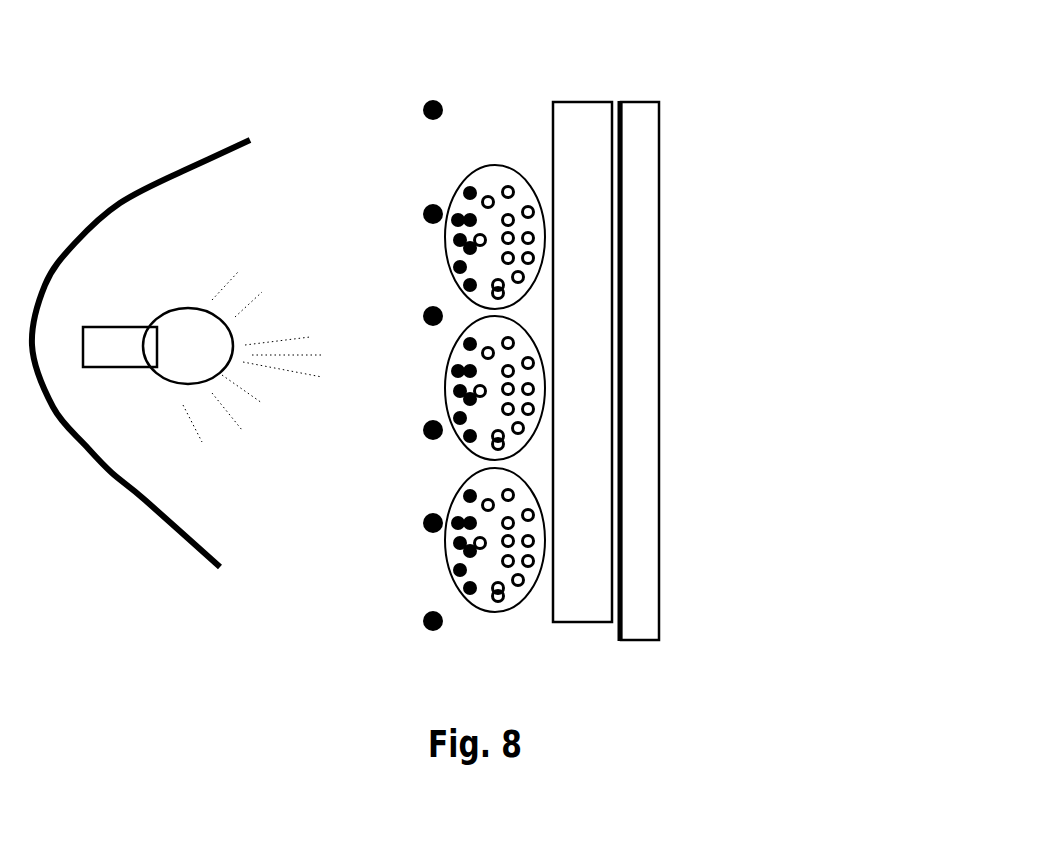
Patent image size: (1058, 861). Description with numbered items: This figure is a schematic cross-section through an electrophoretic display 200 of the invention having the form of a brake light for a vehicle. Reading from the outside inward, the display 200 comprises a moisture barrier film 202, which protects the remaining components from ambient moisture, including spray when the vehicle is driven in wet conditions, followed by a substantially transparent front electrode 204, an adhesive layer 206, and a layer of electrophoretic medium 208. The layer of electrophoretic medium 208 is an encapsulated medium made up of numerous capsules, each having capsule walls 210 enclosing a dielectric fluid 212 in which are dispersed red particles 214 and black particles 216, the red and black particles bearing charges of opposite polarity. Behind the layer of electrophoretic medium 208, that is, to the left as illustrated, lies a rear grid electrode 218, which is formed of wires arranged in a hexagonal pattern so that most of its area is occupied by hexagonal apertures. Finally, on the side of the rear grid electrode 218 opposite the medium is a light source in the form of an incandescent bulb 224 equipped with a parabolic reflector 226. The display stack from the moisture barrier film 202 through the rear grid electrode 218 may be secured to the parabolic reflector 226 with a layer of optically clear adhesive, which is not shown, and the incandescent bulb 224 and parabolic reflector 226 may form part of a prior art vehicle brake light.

The electrophoretic display 200 is at (537, 88).
The moisture barrier film 202 is at (635, 360).
The front electrode 204 is at (617, 292).
The adhesive layer 206 is at (585, 465).
The layer of electrophoretic medium 208 is at (488, 617).
The capsule walls 210 is at (474, 173).
The dielectric fluid 212 is at (495, 212).
The red particles 214 is at (509, 191).
The black particles 216 is at (460, 268).
The rear grid electrode 218 is at (427, 163).
The incandescent bulb 224 is at (203, 350).
The parabolic reflector 226 is at (145, 500).